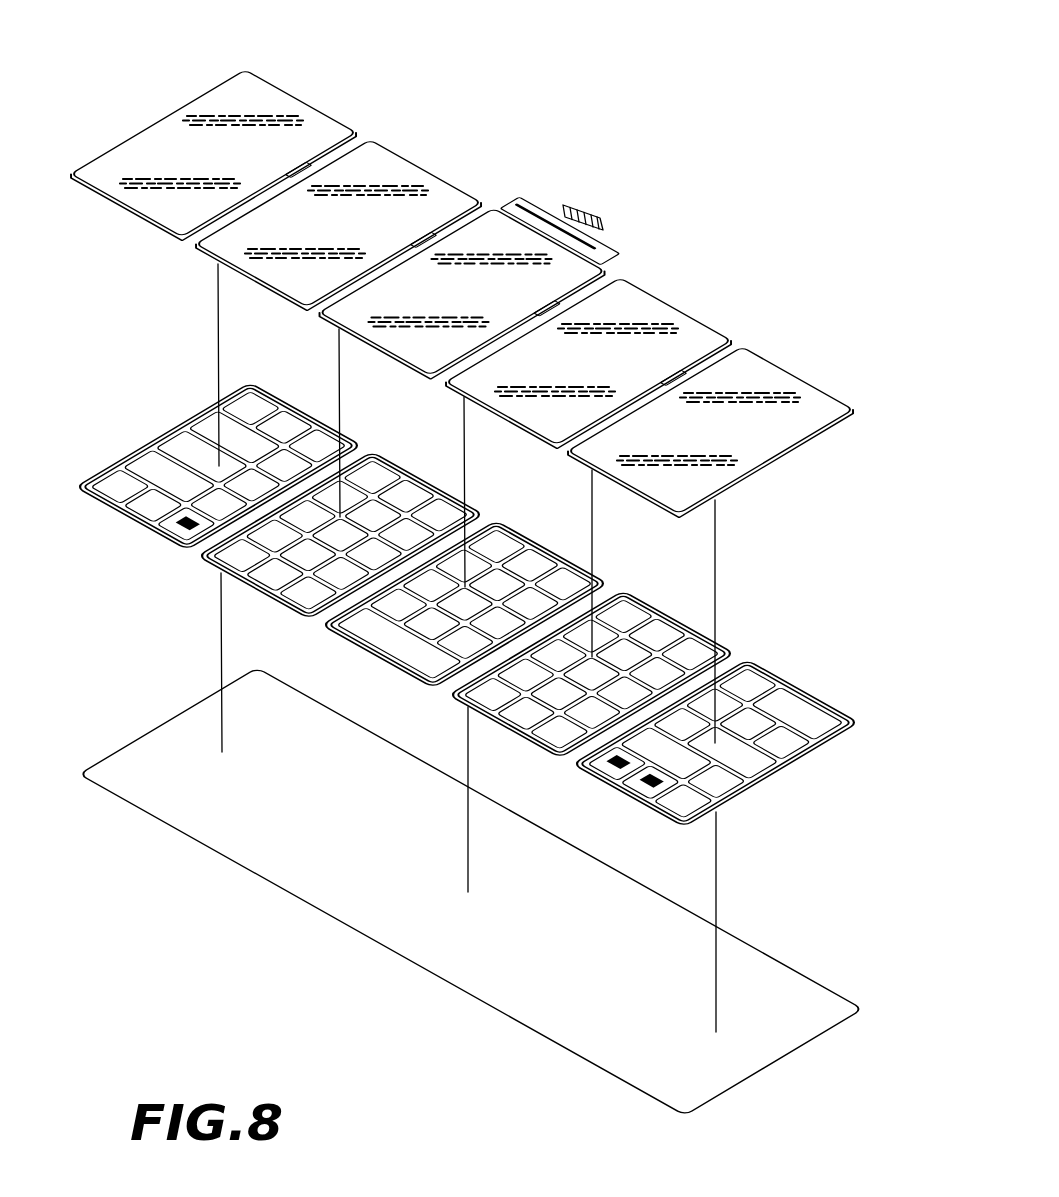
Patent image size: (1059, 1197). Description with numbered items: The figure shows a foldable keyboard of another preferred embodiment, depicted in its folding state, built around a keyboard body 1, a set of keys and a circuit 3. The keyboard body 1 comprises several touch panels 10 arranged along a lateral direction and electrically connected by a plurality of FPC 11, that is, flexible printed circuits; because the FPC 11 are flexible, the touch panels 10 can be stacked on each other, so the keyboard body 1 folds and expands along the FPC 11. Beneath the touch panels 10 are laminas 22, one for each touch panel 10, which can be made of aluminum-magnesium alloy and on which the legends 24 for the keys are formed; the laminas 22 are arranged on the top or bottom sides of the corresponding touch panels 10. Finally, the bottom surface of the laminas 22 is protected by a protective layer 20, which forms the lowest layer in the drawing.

The keyboard body 1 is at (128, 76).
The circuit 3 is at (612, 202).
The touch panel 10 is at (277, 102).
The FPC 11 is at (331, 147).
The protective layer 20 is at (160, 735).
The lamina 22 is at (464, 594).
The legend 24 is at (184, 509).